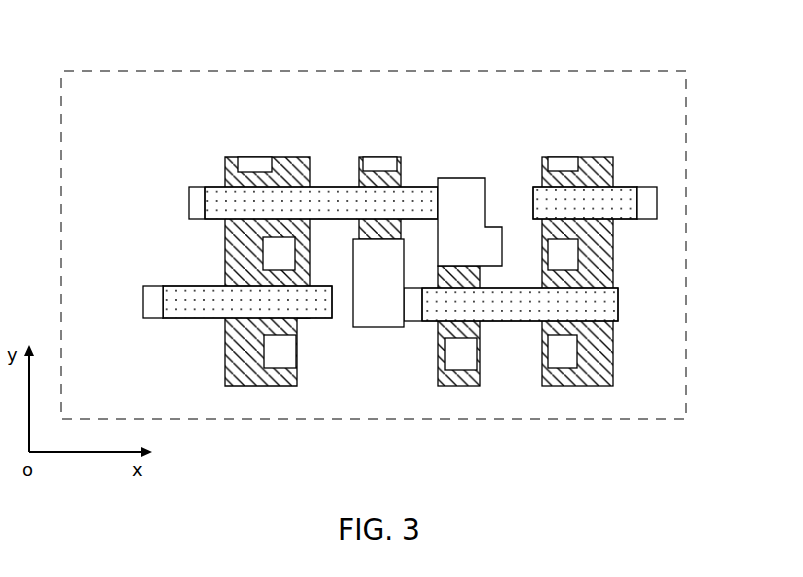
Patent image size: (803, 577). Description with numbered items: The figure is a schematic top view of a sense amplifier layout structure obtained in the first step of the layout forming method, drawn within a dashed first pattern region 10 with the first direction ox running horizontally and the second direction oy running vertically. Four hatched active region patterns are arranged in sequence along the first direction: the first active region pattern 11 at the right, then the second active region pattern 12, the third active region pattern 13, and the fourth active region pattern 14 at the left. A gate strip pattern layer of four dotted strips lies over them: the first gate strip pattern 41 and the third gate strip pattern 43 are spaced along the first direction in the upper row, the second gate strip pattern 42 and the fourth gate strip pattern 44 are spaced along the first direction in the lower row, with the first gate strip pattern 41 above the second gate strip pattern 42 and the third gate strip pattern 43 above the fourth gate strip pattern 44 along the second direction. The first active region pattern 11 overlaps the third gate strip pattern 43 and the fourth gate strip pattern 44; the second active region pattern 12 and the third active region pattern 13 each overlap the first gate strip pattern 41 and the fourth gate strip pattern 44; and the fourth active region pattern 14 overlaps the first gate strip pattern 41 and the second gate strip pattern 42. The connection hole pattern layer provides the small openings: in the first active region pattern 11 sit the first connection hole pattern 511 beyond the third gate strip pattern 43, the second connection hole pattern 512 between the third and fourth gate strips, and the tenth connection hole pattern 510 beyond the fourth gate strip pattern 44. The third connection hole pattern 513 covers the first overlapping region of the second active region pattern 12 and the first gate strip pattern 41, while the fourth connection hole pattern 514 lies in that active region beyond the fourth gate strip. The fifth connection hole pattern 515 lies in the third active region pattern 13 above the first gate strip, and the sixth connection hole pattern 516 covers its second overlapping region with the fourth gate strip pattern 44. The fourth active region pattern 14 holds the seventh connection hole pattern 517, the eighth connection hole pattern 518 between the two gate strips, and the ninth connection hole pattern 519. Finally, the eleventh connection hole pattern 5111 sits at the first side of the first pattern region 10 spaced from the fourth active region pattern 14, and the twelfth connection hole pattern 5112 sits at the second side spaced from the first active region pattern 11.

The first pattern region 10 is at (488, 71).
The first active region pattern 11 is at (595, 162).
The second active region pattern 12 is at (447, 383).
The third active region pattern 13 is at (397, 160).
The fourth active region pattern 14 is at (288, 158).
The first gate strip pattern 41 is at (240, 193).
The second gate strip pattern 42 is at (240, 295).
The third gate strip pattern 43 is at (547, 202).
The fourth gate strip pattern 44 is at (535, 293).
The tenth connection hole pattern 510 is at (552, 367).
The first connection hole pattern 511 is at (552, 162).
The second connection hole pattern 512 is at (545, 260).
The third connection hole pattern 513 is at (452, 178).
The fourth connection hole pattern 514 is at (455, 365).
The fifth connection hole pattern 515 is at (367, 162).
The sixth connection hole pattern 516 is at (353, 323).
The seventh connection hole pattern 517 is at (232, 157).
The eighth connection hole pattern 518 is at (265, 260).
The ninth connection hole pattern 519 is at (265, 360).
The eleventh connection hole pattern 5111 is at (142, 302).
The twelfth connection hole pattern 5112 is at (649, 195).